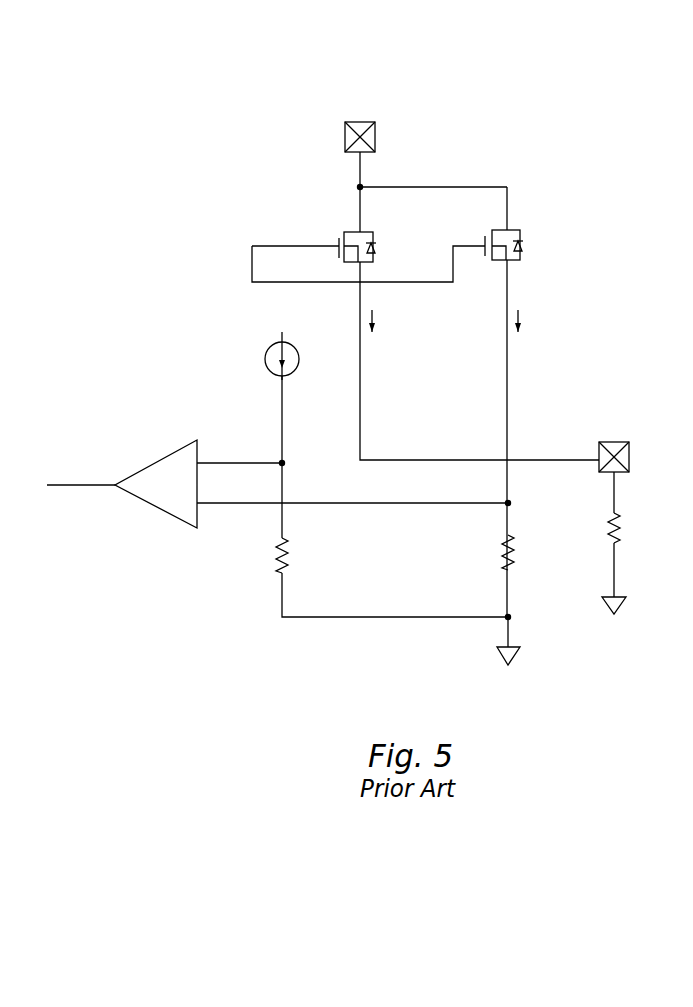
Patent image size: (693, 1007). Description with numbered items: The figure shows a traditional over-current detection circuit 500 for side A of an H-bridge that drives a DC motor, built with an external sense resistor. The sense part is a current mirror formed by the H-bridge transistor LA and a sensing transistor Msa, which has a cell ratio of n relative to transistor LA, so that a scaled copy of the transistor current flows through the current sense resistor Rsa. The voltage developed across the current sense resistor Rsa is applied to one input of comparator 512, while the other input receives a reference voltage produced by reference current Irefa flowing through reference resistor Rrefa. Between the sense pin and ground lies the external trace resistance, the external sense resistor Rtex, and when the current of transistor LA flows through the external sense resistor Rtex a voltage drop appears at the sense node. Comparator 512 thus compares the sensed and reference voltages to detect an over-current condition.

The prior art current sensing circuit 500 is at (167, 127).
The comparator 512 is at (171, 452).
The transistor LA is at (364, 235).
The sensing transistor Msa is at (520, 232).
The reference current Irefa is at (255, 356).
The reference resistor Rrefa is at (248, 555).
The current sense resistor Rsa is at (536, 552).
The external sense resistor Rtex is at (644, 531).